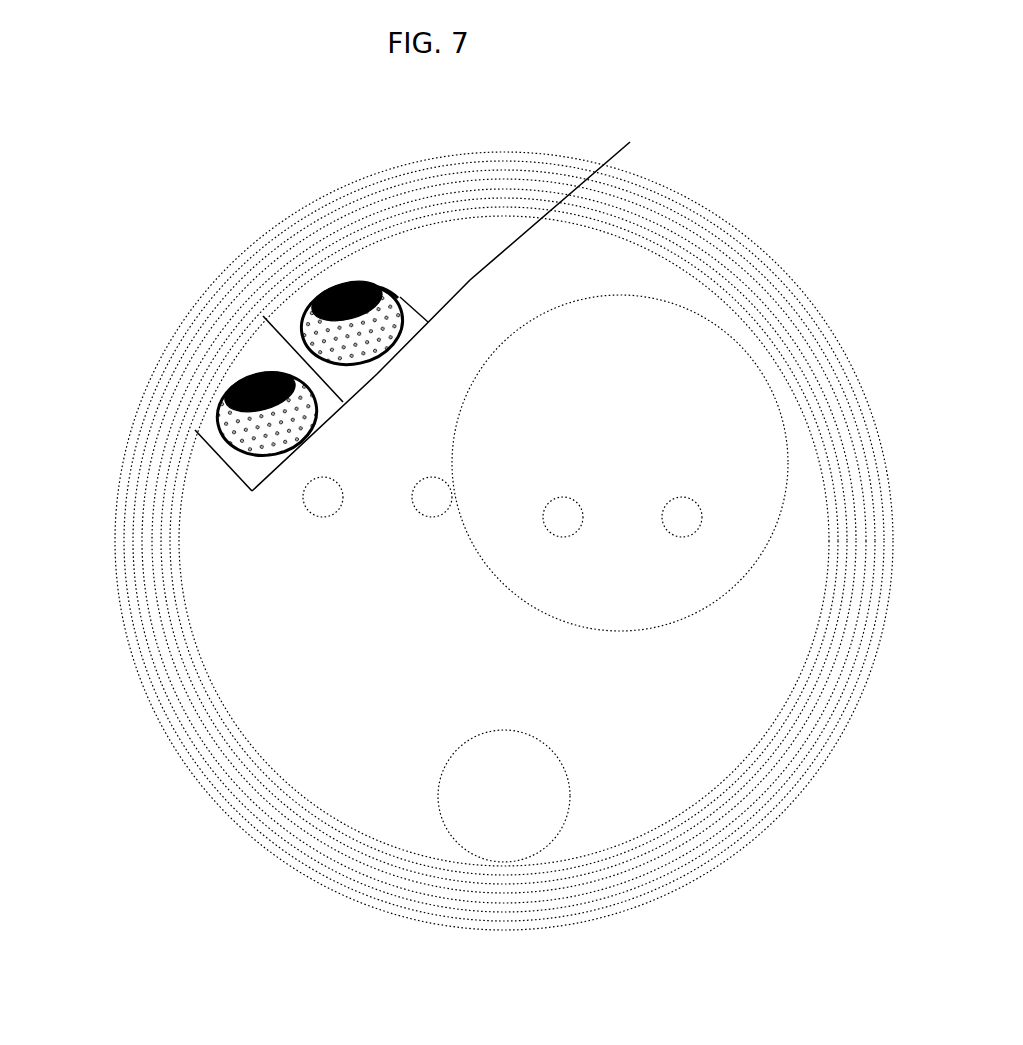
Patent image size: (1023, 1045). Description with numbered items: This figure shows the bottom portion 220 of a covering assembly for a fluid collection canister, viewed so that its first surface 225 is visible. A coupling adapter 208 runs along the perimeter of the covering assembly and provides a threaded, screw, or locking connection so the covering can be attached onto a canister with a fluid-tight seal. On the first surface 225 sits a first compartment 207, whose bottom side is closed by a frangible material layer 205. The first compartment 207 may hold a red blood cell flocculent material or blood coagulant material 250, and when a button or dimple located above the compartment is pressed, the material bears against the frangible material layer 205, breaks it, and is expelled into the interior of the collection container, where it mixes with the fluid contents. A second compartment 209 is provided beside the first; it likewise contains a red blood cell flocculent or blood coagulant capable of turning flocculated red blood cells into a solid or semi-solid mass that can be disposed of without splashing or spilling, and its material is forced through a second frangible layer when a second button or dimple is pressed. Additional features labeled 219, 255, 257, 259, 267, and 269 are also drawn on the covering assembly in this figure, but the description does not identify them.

The frangible material layer 205 is at (242, 261).
The first compartment 207 is at (409, 305).
The coupling adapter 208 is at (693, 230).
The second compartment 209 is at (275, 462).
The lower grommet body 219 is at (235, 438).
The bottom portion 220 is at (843, 272).
The first surface 225 is at (358, 646).
The red blood cell flocculent material or blood coagulant material 250 is at (305, 320).
The grommet rim 255 is at (339, 223).
The upper grommet opening 257 is at (340, 287).
The partition line 259 is at (455, 302).
The lower grommet opening 267 is at (220, 407).
The lower grommet assembly 269 is at (182, 492).